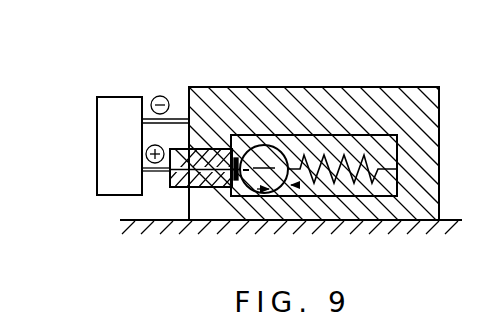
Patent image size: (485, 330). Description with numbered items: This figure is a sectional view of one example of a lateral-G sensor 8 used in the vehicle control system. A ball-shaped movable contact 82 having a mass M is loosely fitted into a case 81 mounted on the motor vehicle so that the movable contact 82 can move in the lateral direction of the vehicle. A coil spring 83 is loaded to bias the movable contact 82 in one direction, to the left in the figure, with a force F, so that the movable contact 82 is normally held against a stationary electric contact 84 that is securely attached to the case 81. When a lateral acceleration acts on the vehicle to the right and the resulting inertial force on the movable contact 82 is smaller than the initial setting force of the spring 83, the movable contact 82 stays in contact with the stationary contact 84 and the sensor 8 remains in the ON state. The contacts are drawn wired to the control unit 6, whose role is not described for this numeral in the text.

The ECU (electronic control unit) 6 is at (118, 97).
The actuator housing 8 is at (299, 130).
The housing body 81 is at (302, 97).
The damper (dv/dt) element 82 is at (270, 193).
The spring 83 is at (362, 183).
The rod / piston plate 84 is at (236, 197).